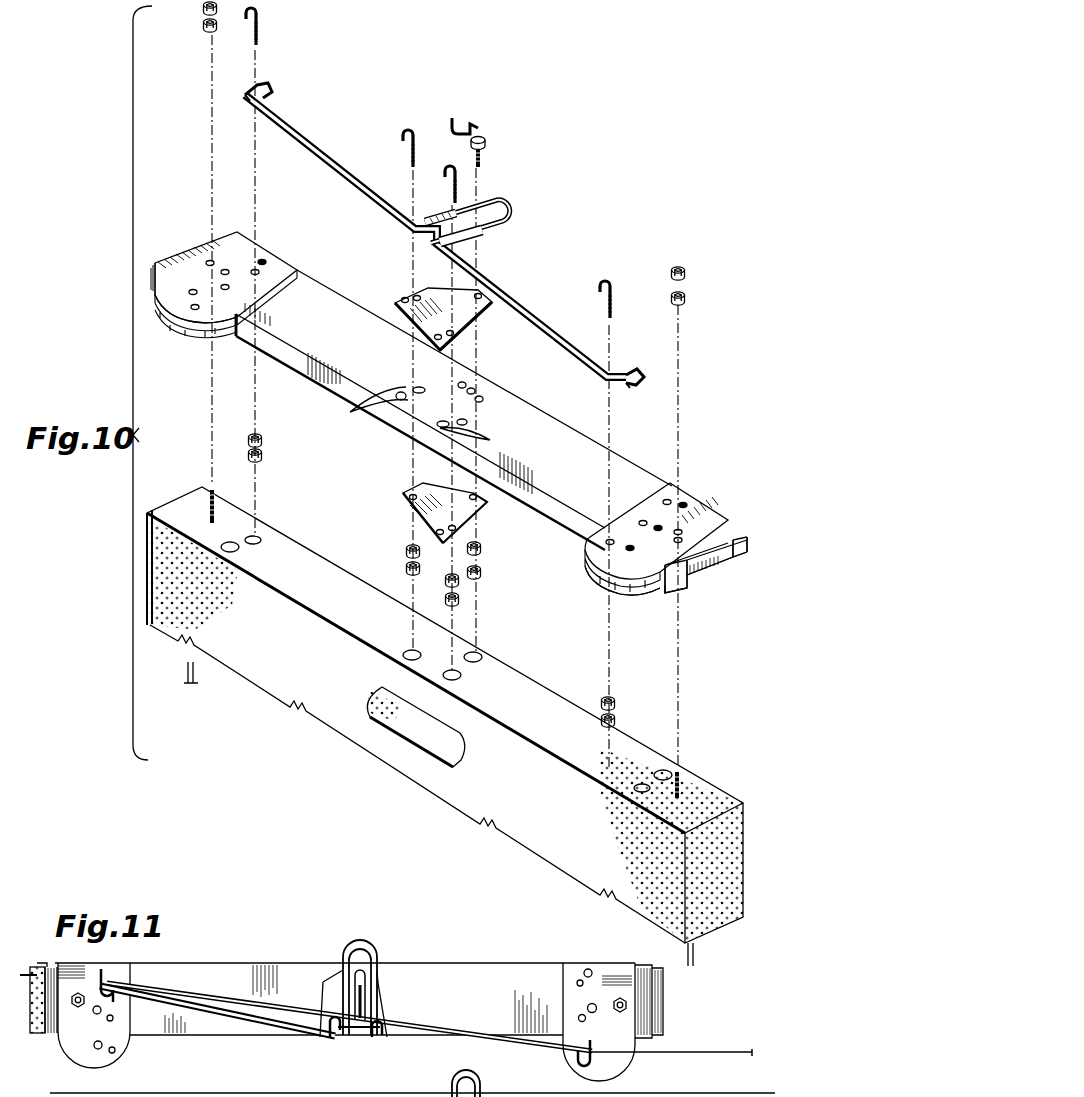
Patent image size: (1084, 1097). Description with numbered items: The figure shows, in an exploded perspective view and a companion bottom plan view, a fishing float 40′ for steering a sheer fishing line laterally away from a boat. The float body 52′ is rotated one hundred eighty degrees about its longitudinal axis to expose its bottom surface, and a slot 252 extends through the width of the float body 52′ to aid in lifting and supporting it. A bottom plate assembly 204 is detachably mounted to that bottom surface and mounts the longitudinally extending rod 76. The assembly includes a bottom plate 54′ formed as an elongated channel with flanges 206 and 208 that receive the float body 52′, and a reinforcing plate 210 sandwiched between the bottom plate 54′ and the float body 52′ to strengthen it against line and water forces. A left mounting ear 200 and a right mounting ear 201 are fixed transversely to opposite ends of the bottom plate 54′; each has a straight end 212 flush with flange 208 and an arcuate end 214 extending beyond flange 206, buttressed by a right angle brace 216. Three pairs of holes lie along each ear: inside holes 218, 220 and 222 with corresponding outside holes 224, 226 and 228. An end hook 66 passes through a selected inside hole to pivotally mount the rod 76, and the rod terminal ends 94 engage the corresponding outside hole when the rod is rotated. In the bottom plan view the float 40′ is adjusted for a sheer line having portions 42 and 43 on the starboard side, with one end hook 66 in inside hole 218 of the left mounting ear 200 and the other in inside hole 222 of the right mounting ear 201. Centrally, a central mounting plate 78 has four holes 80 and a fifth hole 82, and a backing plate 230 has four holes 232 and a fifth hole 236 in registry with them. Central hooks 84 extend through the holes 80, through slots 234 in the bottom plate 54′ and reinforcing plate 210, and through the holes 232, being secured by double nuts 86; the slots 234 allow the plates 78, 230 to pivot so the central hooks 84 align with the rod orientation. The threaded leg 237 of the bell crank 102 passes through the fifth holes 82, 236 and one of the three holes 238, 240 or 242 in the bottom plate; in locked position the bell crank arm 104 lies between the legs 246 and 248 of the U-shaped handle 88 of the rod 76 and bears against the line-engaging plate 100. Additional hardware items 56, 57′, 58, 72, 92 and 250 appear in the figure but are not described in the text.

In FIG. 11, the float 40′ is at (481, 955).
In FIG. 11, the sheer fishing line portion 42 is at (742, 1051).
In FIG. 11, the sheer fishing line portion 43 is at (46, 960).
In FIG. 10, the float body 52′ is at (545, 797).
In FIG. 10, the bottom plate 54′ is at (712, 560).
In FIG. 11, the bottom plate 54′ is at (665, 990).
In FIG. 10, the anchor stud 56 is at (205, 500).
In FIG. 10, the bolt hole 57′ is at (208, 260).
In FIG. 10, the nut 58 is at (204, 24).
In FIG. 11, the nut 58 is at (74, 1005).
In FIG. 10, the end hook 66 is at (610, 278).
In FIG. 11, the end hook 66 is at (115, 985).
In FIG. 10, the nut 72 is at (263, 454).
In FIG. 10, the rod 76 is at (340, 189).
In FIG. 11, the rod 76 is at (426, 1056).
In FIG. 10, the central mounting plate 78 is at (468, 336).
In FIG. 11, the central mounting plate 78 is at (323, 984).
In FIG. 10, the holes 80 is at (406, 297).
In FIG. 10, the fifth hole 82 is at (487, 305).
In FIG. 10, the central hooks 84 is at (409, 126).
In FIG. 11, the central hooks 84 is at (330, 1034).
In FIG. 10, the double nuts 86 is at (406, 567).
In FIG. 10, the U-shaped handle 88 is at (513, 210).
In FIG. 11, the U-shaped handle 88 is at (362, 948).
In FIG. 10, the rod end 92 is at (240, 93).
In FIG. 10, the rod terminal ends 94 is at (270, 89).
In FIG. 10, the line-engaging plate 100 is at (432, 241).
In FIG. 11, the line-engaging plate 100 is at (343, 1034).
In FIG. 10, the bell crank 102 is at (462, 95).
In FIG. 10, the bell crank arm 104 is at (470, 118).
In FIG. 10, the left mounting ear 200 is at (183, 324).
In FIG. 11, the left mounting ear 200 is at (75, 1062).
In FIG. 10, the right mounting ear 201 is at (650, 580).
In FIG. 11, the right mounting ear 201 is at (632, 1062).
In FIG. 10, the bottom plate assembly 204 is at (548, 530).
In FIG. 10, the flange 206 is at (688, 592).
In FIG. 10, the flange 208 is at (749, 550).
In FIG. 10, the reinforcing plate 210 is at (710, 575).
In FIG. 10, the straight end 212 is at (705, 512).
In FIG. 10, the arcuate second end 214 is at (183, 336).
In FIG. 10, the right angle brace 216 is at (236, 338).
In FIG. 10, the inside hole 218 is at (292, 266).
In FIG. 11, the inside hole 218 is at (588, 1005).
In FIG. 10, the inside hole 220 is at (229, 288).
In FIG. 11, the inside hole 220 is at (114, 1021).
In FIG. 10, the inside hole 222 is at (195, 311).
In FIG. 11, the inside hole 222 is at (102, 1047).
In FIG. 10, the outside hole 224 is at (259, 271).
In FIG. 11, the outside hole 224 is at (589, 969).
In FIG. 10, the outside hole 226 is at (225, 269).
In FIG. 11, the outside hole 226 is at (95, 1014).
In FIG. 10, the outside hole 228 is at (193, 289).
In FIG. 11, the outside hole 228 is at (111, 1054).
In FIG. 10, the backing plate 230 is at (403, 518).
In FIG. 10, the holes 232 is at (410, 495).
In FIG. 10, the slots 234 is at (375, 400).
In FIG. 10, the fifth hole 236 is at (488, 502).
In FIG. 10, the threaded leg 237 is at (487, 150).
In FIG. 10, the hole 238 is at (467, 385).
In FIG. 10, the hole 240 is at (476, 391).
In FIG. 10, the third crank receiving hole 242 is at (484, 400).
In FIG. 10, the leg 246 is at (490, 203).
In FIG. 11, the leg 246 is at (345, 962).
In FIG. 10, the leg 248 is at (498, 232).
In FIG. 11, the leg 248 is at (380, 968).
In FIG. 10, the nut 250 is at (482, 571).
In FIG. 10, the slot 252 is at (428, 755).